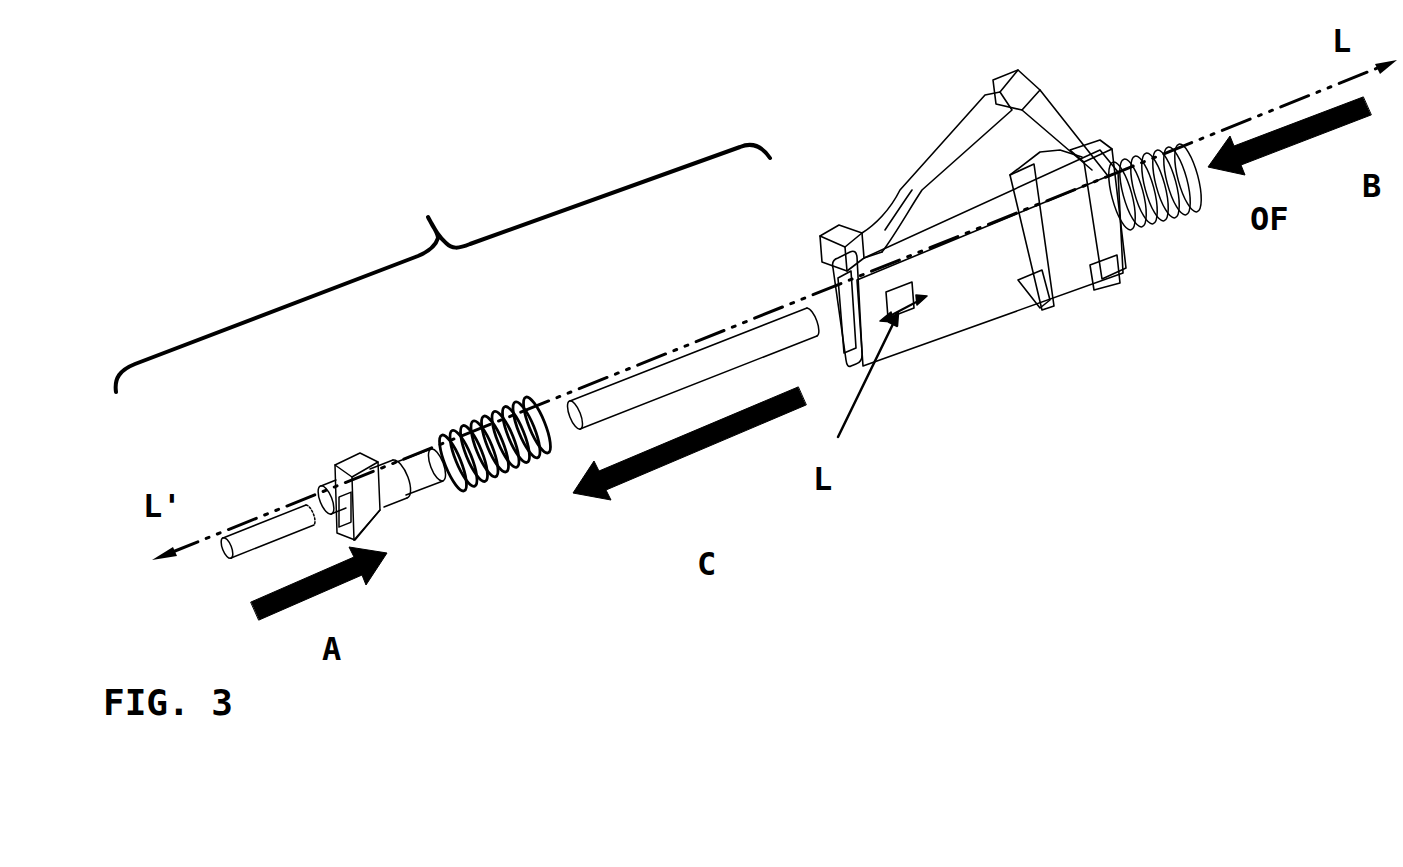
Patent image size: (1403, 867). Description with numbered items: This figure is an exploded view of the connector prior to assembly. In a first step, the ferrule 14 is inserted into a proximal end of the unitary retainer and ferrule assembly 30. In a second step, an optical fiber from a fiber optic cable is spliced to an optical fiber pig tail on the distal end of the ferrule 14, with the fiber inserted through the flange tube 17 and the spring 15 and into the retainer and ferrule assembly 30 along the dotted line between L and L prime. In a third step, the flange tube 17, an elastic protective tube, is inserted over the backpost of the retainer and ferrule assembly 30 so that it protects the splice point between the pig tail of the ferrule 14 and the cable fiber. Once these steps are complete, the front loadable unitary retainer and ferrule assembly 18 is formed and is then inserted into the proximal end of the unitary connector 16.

The ferrule 14 is at (248, 477).
The spring 15 is at (463, 389).
The unitary connector 16 is at (954, 359).
The flange tube 17 is at (662, 374).
The front loadable unitary retainer and ferrule assembly 18 is at (443, 268).
The unitary retainer and ferrule assembly 30 is at (391, 521).